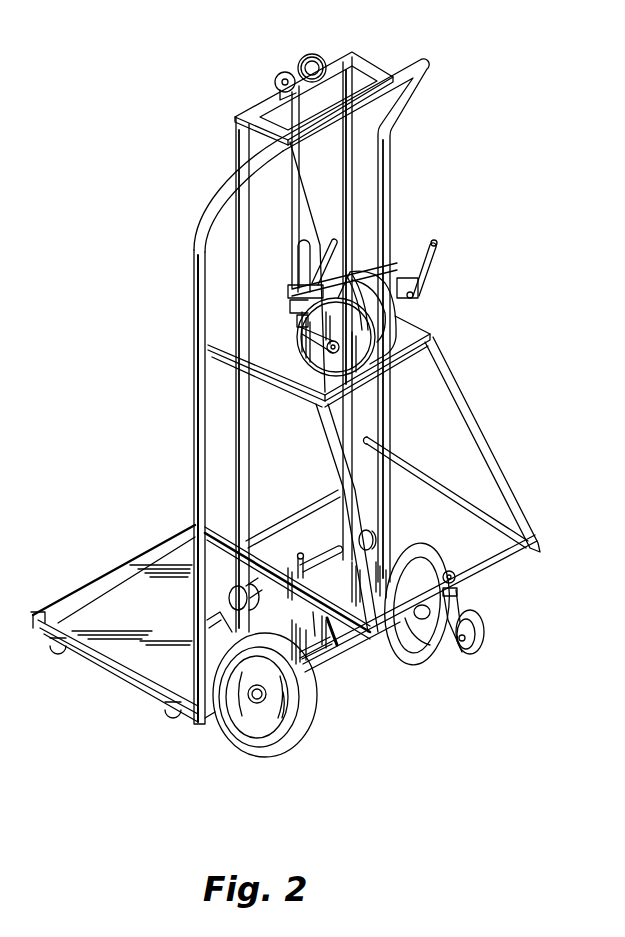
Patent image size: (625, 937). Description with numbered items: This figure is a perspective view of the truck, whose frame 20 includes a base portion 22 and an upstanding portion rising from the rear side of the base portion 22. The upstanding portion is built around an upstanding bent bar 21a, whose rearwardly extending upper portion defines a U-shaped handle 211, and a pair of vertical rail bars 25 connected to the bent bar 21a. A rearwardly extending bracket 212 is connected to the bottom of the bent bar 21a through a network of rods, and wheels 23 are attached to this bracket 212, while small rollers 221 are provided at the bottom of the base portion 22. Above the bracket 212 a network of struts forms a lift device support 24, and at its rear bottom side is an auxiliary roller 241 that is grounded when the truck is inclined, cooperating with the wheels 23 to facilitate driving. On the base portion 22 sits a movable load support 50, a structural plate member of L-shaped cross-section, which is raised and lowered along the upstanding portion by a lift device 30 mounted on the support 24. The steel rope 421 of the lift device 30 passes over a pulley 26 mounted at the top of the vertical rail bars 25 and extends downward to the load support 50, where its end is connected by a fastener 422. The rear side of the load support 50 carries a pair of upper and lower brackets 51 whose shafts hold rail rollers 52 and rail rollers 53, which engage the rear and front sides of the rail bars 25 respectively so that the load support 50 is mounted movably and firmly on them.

The frame 20 is at (183, 472).
The upstanding bent bar 21a is at (195, 352).
The U-shaped handle 211 is at (403, 62).
The vertical rail bars 25 is at (350, 133).
The steel rope 421 is at (292, 163).
The pulley 26 is at (296, 58).
The lift device 30 is at (430, 320).
The lift device support 24 is at (483, 441).
The fastener 422 is at (283, 513).
The rail rollers 52 is at (230, 602).
The movable load support 50 is at (97, 657).
The base portion 22 is at (116, 668).
The small rollers 221 is at (177, 723).
The rearwardly extending bracket 212 is at (397, 600).
The wheels 23 is at (445, 667).
The auxiliary roller 241 is at (490, 633).
The rail rollers 53 is at (332, 633).
The upper and lower brackets 51 is at (310, 668).